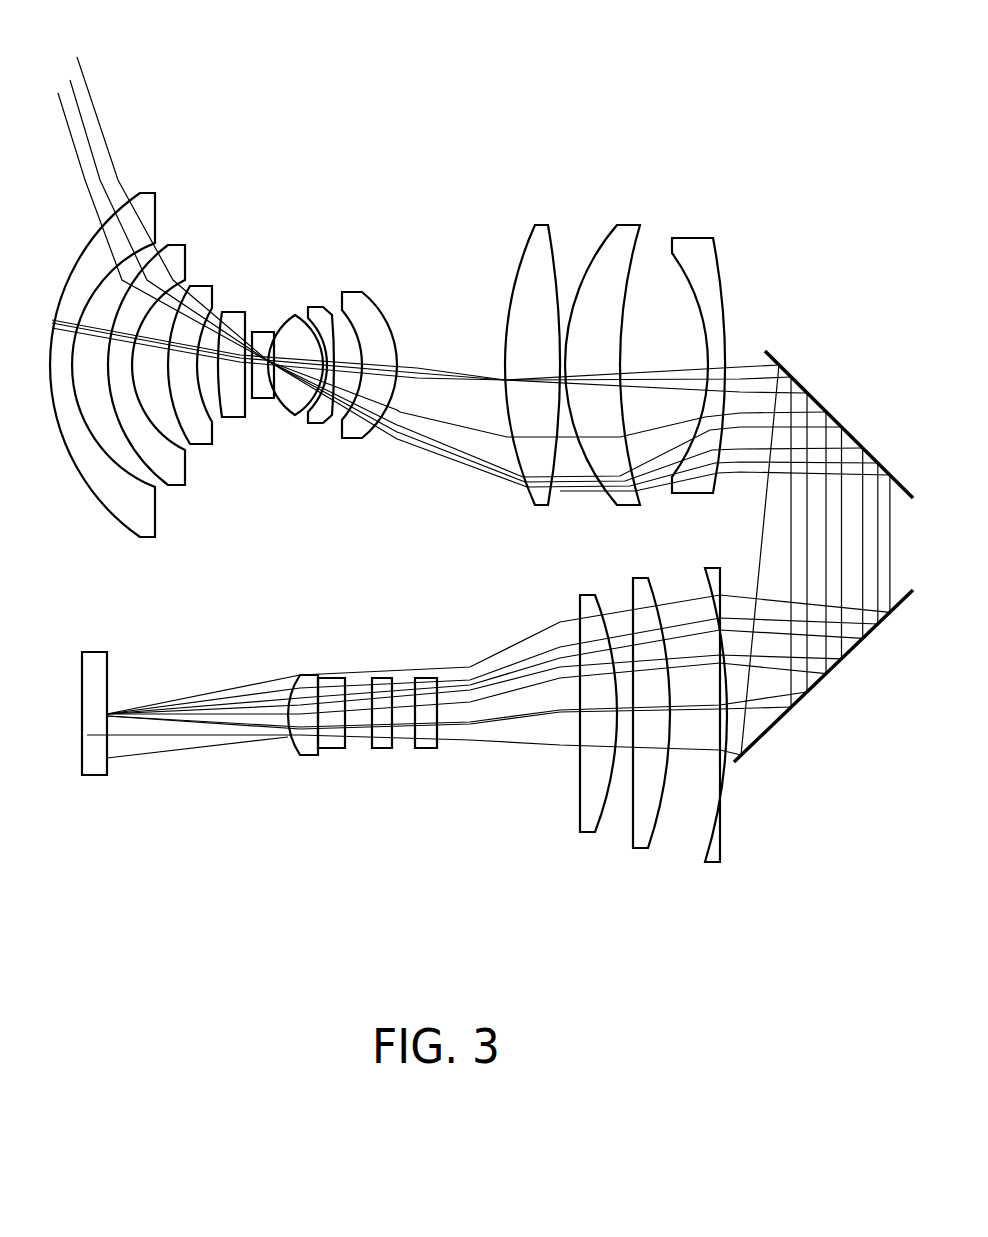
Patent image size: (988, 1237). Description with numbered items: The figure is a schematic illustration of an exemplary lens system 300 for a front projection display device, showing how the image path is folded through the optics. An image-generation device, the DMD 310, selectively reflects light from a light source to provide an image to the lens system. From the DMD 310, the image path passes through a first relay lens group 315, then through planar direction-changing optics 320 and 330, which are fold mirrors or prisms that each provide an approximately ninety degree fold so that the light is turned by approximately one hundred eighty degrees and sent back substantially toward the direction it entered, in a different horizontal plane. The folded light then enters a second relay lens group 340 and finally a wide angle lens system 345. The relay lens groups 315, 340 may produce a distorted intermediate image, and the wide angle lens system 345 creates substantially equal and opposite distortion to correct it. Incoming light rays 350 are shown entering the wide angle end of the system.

The lens system 300 is at (493, 77).
The incoming light rays 350 is at (98, 122).
The wide angle lens system 345 is at (382, 186).
The second relay lens group 340 is at (727, 203).
The direction-changing optic 330 is at (834, 419).
The direction-changing optic 320 is at (774, 727).
The first relay lens group 315 is at (285, 866).
The DMD 310 is at (90, 774).